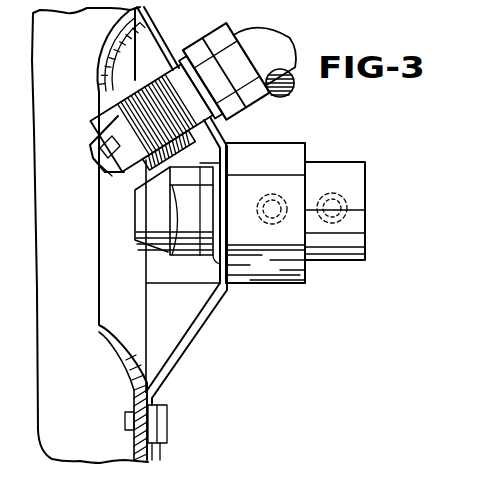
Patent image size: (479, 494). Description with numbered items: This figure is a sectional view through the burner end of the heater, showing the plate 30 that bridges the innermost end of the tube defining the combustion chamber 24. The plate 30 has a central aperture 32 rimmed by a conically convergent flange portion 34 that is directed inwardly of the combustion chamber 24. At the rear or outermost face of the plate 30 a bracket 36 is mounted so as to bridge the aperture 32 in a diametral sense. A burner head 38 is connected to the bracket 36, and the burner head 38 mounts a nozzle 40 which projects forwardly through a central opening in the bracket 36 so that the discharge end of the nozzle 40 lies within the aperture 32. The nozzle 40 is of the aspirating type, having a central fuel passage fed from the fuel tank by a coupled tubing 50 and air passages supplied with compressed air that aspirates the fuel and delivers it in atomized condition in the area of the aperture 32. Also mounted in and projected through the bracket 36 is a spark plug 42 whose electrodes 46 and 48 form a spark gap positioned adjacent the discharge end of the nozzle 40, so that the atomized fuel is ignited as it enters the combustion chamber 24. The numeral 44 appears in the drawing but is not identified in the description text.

The combustion chamber 24 is at (85, 362).
The plate 30 is at (129, 22).
The central aperture 32 is at (105, 287).
The conically convergent flange portion 34 is at (107, 80).
The bracket 36 is at (197, 332).
The burner head 38 is at (283, 141).
The nozzle 40 is at (150, 217).
The spark plug 42 is at (203, 48).
The bore opening 44 is at (100, 179).
The electrode 46 is at (97, 140).
The electrode 48 is at (128, 168).
The tubing 50 is at (344, 195).